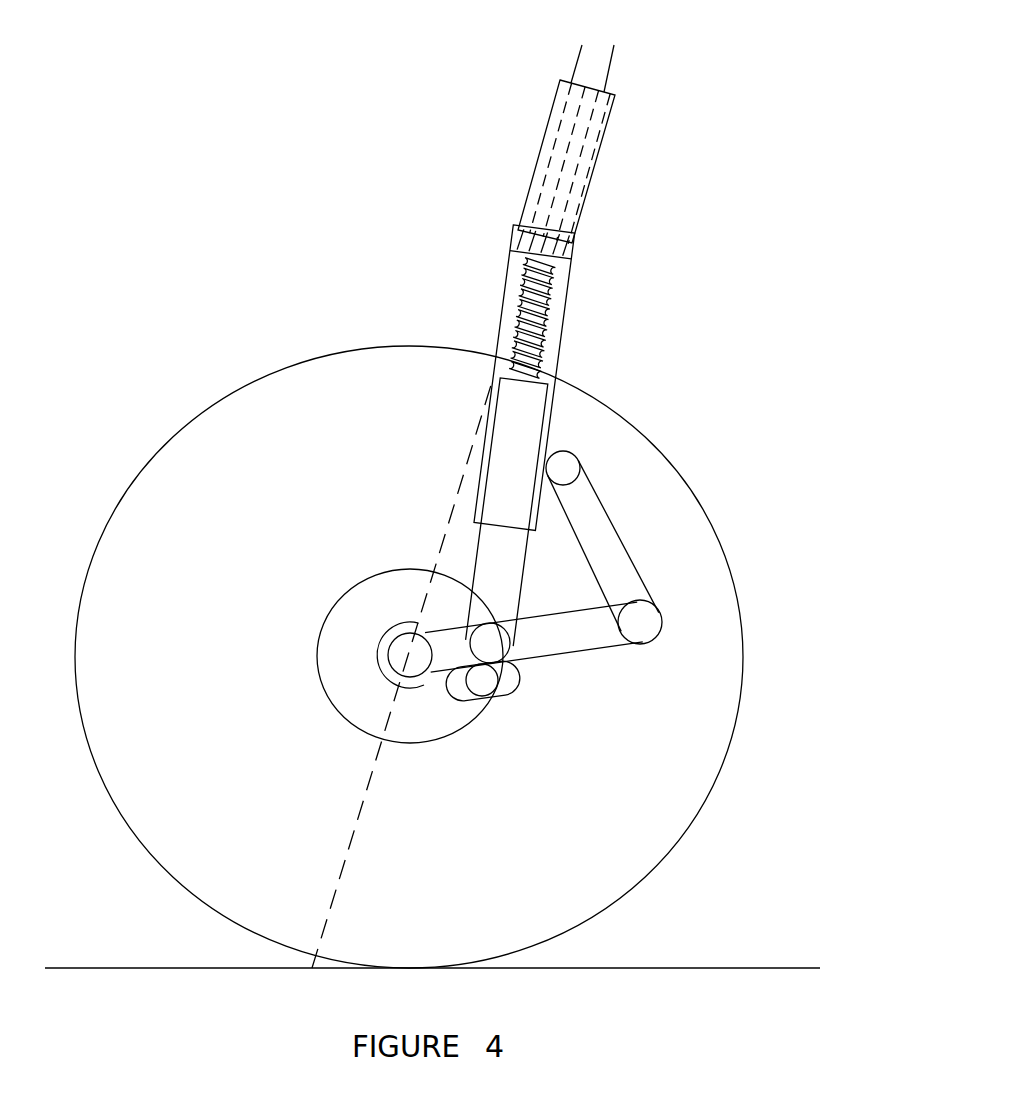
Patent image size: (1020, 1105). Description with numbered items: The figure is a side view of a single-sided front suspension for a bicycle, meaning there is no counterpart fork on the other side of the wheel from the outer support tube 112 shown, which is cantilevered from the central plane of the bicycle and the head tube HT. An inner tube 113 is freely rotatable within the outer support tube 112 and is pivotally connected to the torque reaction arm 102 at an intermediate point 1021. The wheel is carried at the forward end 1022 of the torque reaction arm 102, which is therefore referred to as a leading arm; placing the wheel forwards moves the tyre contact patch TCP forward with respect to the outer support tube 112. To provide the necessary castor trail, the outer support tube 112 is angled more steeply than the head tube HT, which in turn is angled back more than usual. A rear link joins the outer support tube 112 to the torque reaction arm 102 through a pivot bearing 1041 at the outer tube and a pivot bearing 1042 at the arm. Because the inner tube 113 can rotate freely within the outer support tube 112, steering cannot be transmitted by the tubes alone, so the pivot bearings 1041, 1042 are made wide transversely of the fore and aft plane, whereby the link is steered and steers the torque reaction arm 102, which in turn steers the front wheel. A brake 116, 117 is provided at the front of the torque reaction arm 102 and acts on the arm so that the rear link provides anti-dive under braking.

The head tube HT is at (485, 144).
The outer support tube 112 is at (457, 378).
The inner tube 113 is at (420, 512).
The intermediate point 1021 is at (368, 598).
The forward end 1022 is at (307, 660).
The pivot bearing 1041 is at (662, 487).
The pivot bearing 1042 is at (737, 580).
The torque reaction arm 102 is at (576, 637).
The brake 116 is at (524, 683).
The brake 117 is at (438, 665).
The tyre contact patch TCP is at (445, 918).